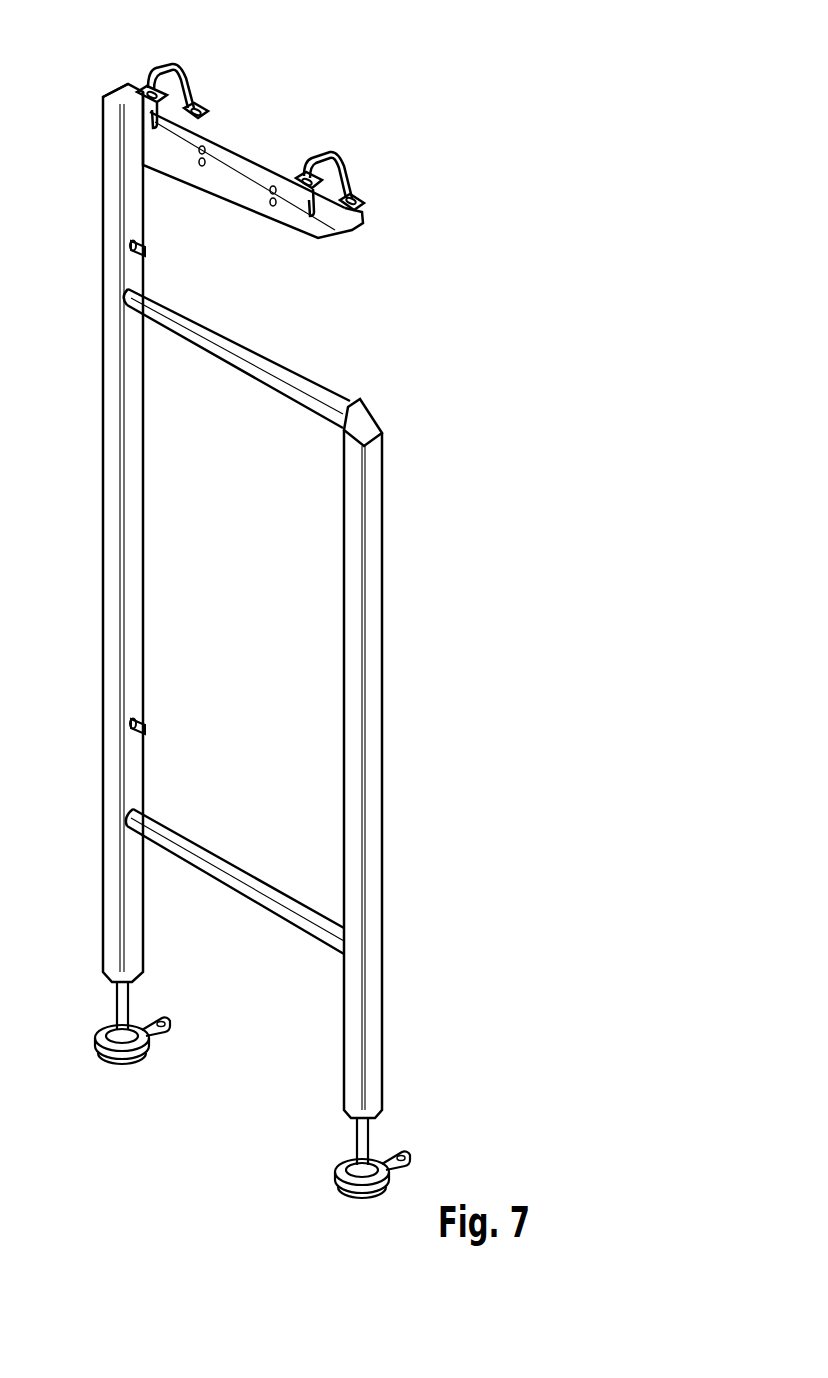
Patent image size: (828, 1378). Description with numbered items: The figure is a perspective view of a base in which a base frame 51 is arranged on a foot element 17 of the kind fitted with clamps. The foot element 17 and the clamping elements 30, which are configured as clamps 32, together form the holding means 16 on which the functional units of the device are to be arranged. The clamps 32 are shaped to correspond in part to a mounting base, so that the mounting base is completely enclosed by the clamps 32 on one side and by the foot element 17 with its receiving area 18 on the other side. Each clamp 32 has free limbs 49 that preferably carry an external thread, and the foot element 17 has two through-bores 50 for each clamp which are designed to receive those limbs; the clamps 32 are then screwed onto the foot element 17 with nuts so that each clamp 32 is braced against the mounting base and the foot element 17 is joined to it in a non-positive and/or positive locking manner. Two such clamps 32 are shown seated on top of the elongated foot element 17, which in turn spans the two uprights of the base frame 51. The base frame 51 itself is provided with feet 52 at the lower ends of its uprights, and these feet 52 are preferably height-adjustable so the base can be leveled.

The holding means 16 is at (270, 605).
The foot element 17 is at (229, 185).
The receiving area 18 is at (158, 130).
The clamping element 30 is at (254, 108).
The clamp 32 is at (170, 66).
The free limb 49 is at (148, 90).
The through-bore 50 is at (143, 92).
The base frame 51 is at (375, 781).
The foot 52 is at (97, 1042).